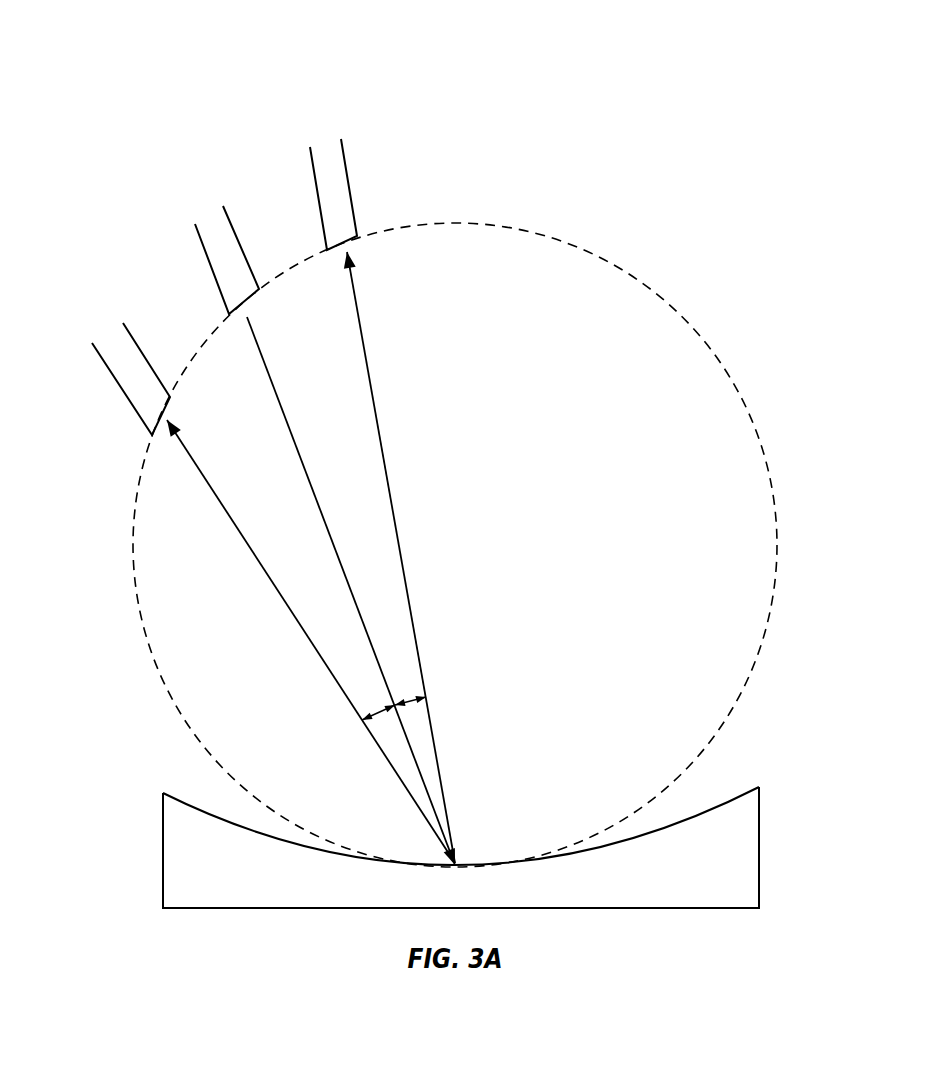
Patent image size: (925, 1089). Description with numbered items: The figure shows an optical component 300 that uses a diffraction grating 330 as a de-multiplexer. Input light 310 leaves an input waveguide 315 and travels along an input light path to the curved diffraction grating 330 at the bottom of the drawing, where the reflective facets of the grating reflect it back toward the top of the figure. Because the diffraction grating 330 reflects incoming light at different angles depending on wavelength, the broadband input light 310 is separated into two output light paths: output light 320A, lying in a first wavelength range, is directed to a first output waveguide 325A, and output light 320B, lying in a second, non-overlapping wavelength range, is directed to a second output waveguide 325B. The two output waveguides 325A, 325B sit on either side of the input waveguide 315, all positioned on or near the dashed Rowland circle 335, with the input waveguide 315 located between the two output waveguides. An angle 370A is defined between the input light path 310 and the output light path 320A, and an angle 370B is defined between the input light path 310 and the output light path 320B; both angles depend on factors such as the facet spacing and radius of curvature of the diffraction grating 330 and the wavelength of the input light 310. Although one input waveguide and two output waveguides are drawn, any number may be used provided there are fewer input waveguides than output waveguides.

The optical component 300 is at (162, 96).
The input light 310 is at (285, 417).
The input waveguide 315 is at (213, 273).
The output light 320A is at (240, 533).
The output light 320B is at (368, 372).
The first output waveguide 325A is at (117, 382).
The second output waveguide 325B is at (317, 192).
The diffraction grating 330 is at (759, 845).
The Rowland circle 335 is at (603, 256).
The angle 370A is at (378, 713).
The angle 370B is at (408, 702).